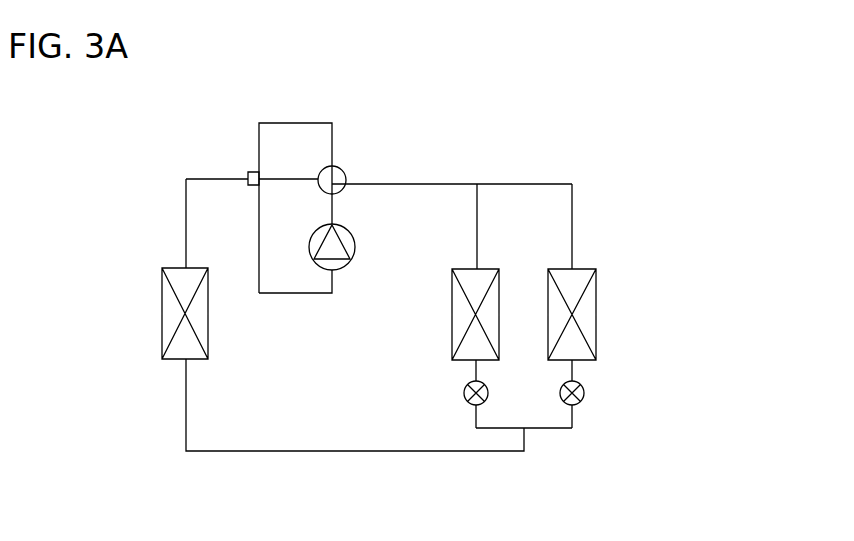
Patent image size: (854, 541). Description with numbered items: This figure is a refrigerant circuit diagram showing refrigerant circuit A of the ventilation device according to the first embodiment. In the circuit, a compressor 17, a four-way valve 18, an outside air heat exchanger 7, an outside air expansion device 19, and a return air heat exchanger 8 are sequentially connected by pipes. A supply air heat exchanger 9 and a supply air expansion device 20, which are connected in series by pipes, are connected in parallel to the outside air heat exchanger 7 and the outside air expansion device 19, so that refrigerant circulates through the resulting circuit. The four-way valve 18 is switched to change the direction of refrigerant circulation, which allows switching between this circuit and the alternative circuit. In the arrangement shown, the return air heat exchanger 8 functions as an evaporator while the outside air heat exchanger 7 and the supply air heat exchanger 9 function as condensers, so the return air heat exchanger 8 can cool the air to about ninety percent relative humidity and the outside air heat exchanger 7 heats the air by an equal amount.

The outside air heat exchanger 7 is at (488, 268).
The return air heat exchanger 8 is at (162, 288).
The supply air heat exchanger 9 is at (596, 302).
The compressor 17 is at (349, 233).
The four-way valve 18 is at (343, 169).
The outside air expansion device 19 is at (467, 403).
The supply air expansion device 20 is at (580, 403).